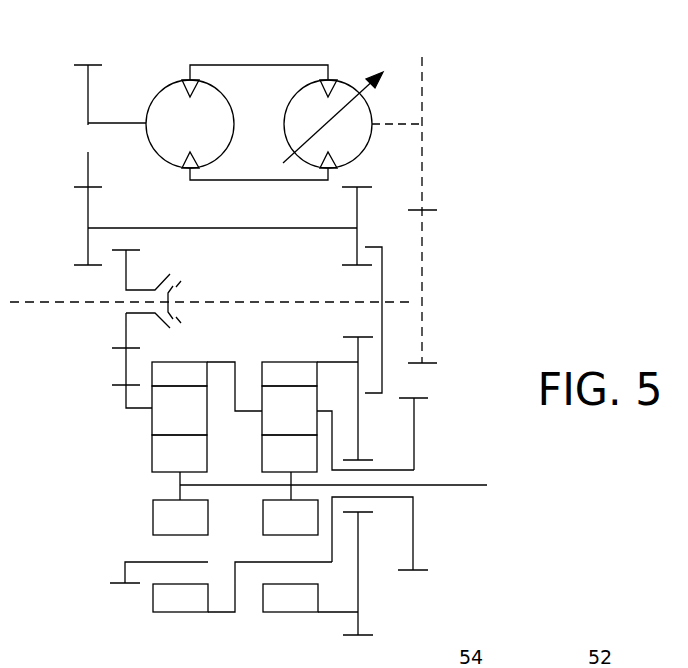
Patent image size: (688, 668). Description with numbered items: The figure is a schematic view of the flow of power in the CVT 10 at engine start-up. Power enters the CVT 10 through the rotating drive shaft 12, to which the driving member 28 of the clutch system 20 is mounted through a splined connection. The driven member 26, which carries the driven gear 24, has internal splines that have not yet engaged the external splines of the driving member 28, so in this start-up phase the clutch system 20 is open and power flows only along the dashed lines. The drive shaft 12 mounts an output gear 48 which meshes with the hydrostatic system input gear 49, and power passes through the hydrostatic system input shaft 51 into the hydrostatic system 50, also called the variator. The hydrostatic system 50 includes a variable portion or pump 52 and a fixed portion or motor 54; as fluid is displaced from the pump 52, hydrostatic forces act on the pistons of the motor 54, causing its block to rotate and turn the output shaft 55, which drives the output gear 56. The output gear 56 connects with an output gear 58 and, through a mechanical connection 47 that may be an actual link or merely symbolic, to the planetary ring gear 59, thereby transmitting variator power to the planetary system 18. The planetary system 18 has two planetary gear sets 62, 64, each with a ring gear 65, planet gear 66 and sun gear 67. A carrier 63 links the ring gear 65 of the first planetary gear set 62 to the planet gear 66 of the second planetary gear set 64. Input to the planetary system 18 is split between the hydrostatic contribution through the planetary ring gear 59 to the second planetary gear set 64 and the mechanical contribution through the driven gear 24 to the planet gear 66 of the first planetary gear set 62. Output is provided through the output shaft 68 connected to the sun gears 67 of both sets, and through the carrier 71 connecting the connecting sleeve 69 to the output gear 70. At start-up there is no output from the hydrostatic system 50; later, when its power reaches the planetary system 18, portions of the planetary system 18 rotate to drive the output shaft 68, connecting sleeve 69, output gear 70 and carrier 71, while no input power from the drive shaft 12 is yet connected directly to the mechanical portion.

The continuously variable transmission 10 is at (503, 109).
The drive shaft 12 is at (27, 300).
The planetary system 18 is at (209, 448).
The clutch system 20 is at (172, 322).
The driven gear 24 is at (126, 327).
The driven member 26 is at (159, 285).
The driving member 28 is at (182, 317).
The mechanical connection 47 is at (382, 336).
The output gear 48 is at (424, 248).
The hydrostatic system input gear 49 is at (422, 170).
The hydrostatic system 50 is at (364, 44).
The hydrostatic system input shaft 51 is at (398, 118).
The pump 52 is at (295, 88).
The motor 54 is at (173, 84).
The output shaft 55 is at (132, 122).
The output gear 56 is at (87, 112).
The output gear 58 is at (358, 210).
The planetary ring gear 59 is at (358, 423).
The first planetary gear set 62 is at (141, 623).
The carrier 63 is at (238, 373).
The second planetary gear set 64 is at (277, 630).
The ring gear 65 is at (234, 374).
The planet gear 66 is at (234, 410).
The sun gear 67 is at (234, 453).
The output shaft 68 is at (476, 486).
The connecting sleeve 69 is at (389, 498).
The output gear 70 is at (413, 530).
The carrier 71 is at (333, 445).